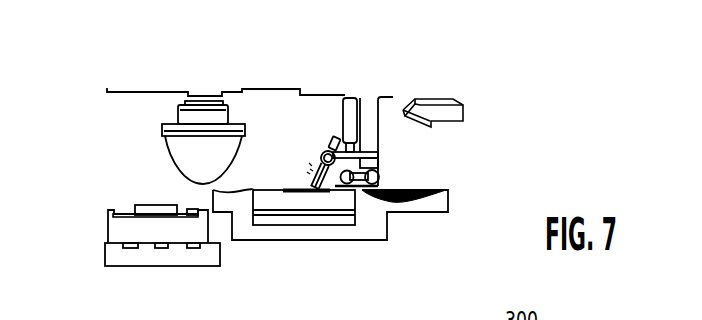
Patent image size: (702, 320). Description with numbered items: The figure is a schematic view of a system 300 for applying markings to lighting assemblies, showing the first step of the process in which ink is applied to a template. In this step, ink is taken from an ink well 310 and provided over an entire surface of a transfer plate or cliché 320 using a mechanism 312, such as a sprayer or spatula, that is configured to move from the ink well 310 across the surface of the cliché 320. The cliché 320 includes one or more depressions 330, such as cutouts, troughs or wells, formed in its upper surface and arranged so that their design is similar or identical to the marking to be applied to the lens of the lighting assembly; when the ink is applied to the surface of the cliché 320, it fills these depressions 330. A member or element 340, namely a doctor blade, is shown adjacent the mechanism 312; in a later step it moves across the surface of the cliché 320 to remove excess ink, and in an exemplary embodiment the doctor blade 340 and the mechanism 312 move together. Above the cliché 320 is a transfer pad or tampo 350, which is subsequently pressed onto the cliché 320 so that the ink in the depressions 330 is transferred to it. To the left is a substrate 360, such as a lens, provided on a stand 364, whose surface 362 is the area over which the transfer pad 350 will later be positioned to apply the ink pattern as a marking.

The system 300 is at (431, 54).
The ink well 310 is at (418, 192).
The mechanism 312 is at (388, 205).
The cliché 320 is at (302, 200).
The depressions 330 is at (292, 192).
The doctor blade 340 is at (317, 188).
The transfer pad 350 is at (187, 156).
The substrate 360 is at (150, 208).
The surface 362 is at (162, 203).
The stand 364 is at (115, 228).